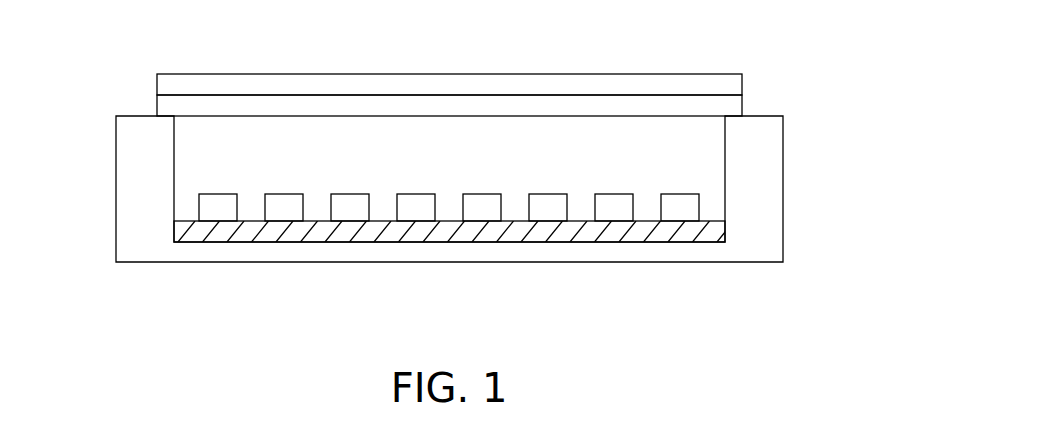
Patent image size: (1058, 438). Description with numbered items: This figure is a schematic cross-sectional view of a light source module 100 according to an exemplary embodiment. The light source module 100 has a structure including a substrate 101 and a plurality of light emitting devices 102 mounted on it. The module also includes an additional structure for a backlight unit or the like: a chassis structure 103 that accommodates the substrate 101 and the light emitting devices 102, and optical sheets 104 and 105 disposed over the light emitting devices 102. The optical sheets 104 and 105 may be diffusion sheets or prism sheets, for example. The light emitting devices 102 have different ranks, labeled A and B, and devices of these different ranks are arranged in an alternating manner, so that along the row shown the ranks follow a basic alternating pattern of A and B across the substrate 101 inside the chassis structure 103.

The light source module 100 is at (657, 65).
The substrate 101 is at (452, 230).
The light emitting devices 102 is at (233, 205).
The chassis structure 103 is at (142, 197).
The optical sheet 104 is at (173, 105).
The optical sheet 105 is at (165, 84).